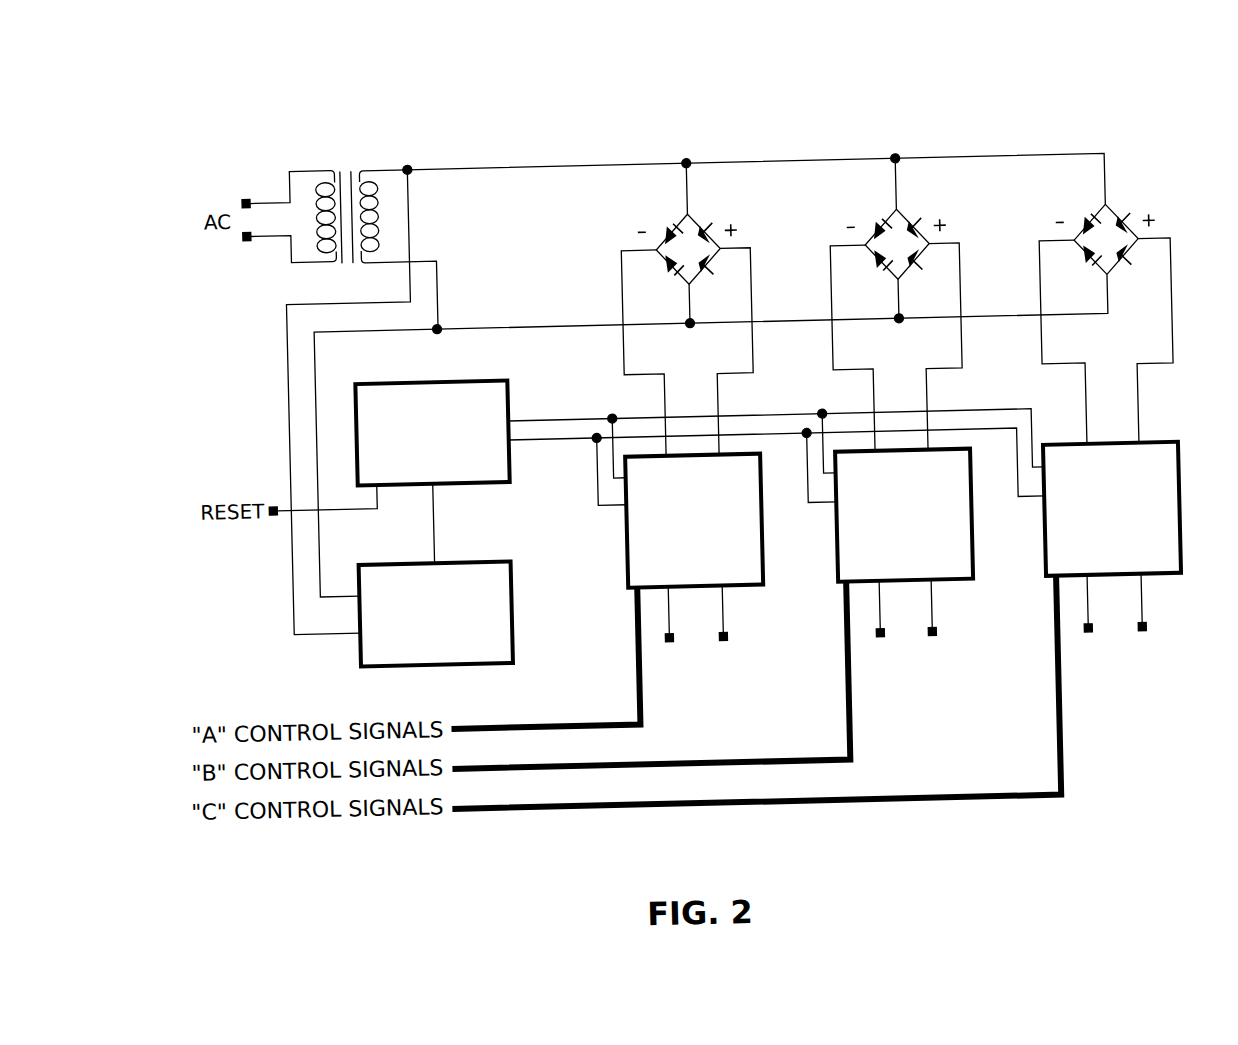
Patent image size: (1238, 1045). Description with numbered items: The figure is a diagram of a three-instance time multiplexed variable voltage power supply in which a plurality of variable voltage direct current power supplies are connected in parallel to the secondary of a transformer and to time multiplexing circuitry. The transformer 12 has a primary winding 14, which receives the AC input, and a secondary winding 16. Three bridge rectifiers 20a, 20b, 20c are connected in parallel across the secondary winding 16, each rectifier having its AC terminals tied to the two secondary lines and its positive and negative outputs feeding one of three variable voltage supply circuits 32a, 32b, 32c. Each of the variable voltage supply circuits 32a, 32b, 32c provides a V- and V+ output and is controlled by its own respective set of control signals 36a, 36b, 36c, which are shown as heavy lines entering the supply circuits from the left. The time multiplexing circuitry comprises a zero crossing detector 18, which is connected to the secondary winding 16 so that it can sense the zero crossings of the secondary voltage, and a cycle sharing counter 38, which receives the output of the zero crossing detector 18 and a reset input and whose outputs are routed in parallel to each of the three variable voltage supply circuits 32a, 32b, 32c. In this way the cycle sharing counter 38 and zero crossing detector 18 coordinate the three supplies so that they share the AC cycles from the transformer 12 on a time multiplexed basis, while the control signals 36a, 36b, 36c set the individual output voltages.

The transformer 12 is at (345, 141).
The primary winding 14 is at (309, 141).
The secondary winding 16 is at (390, 145).
The zero crossing detector 18 is at (399, 558).
The bridge rectifier 20a is at (640, 220).
The bridge rectifier 20b is at (851, 216).
The bridge rectifier 20c is at (1078, 209).
The variable voltage supply circuit 32a is at (740, 588).
The variable voltage supply circuit 32b is at (947, 588).
The variable voltage supply circuit 32c is at (1162, 586).
The control signals 36a is at (587, 719).
The control signals 36b is at (765, 760).
The control signals 36c is at (1002, 797).
The cycle sharing counter 38 is at (479, 478).